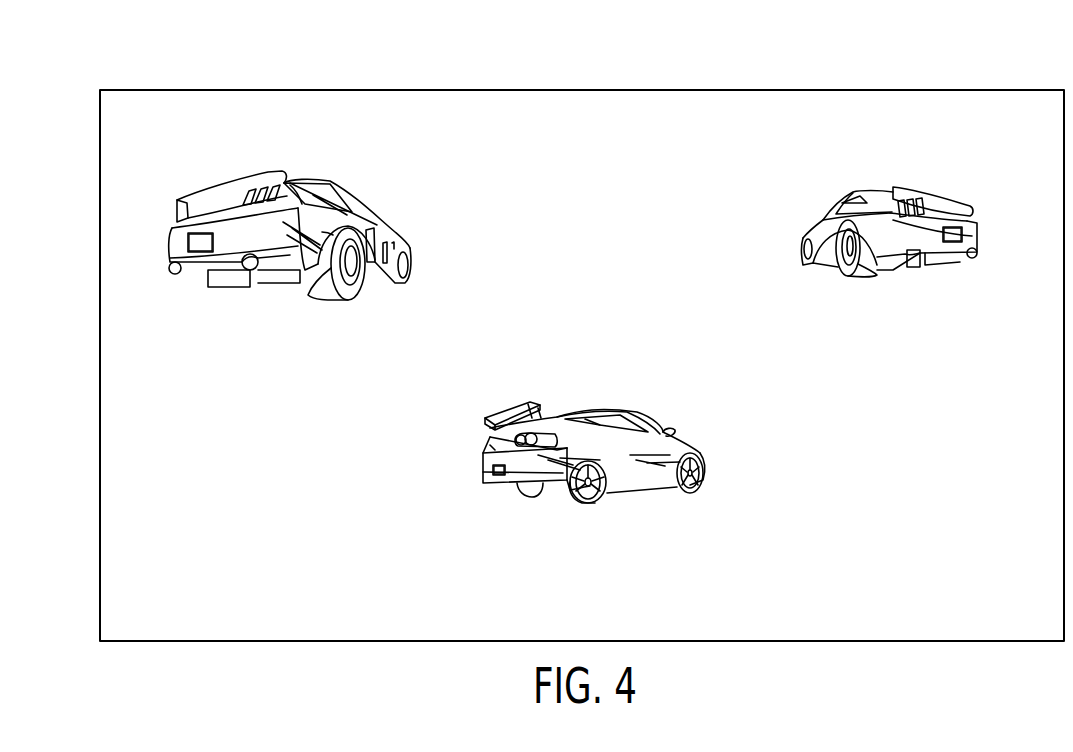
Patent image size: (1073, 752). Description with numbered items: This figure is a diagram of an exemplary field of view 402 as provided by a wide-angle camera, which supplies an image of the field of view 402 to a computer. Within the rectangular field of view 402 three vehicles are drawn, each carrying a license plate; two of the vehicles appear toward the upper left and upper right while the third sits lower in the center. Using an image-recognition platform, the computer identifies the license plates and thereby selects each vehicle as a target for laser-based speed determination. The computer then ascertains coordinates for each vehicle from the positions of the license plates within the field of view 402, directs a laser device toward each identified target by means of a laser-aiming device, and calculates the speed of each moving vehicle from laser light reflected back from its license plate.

The field of view 402 is at (838, 89).